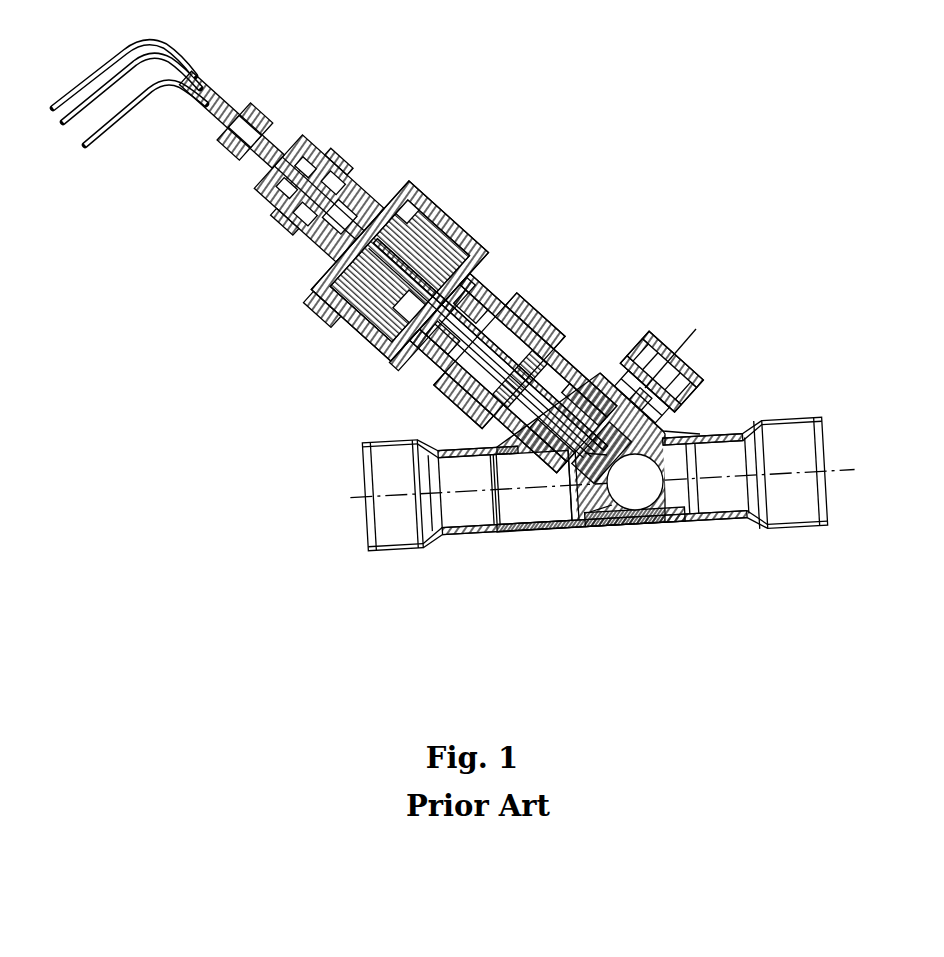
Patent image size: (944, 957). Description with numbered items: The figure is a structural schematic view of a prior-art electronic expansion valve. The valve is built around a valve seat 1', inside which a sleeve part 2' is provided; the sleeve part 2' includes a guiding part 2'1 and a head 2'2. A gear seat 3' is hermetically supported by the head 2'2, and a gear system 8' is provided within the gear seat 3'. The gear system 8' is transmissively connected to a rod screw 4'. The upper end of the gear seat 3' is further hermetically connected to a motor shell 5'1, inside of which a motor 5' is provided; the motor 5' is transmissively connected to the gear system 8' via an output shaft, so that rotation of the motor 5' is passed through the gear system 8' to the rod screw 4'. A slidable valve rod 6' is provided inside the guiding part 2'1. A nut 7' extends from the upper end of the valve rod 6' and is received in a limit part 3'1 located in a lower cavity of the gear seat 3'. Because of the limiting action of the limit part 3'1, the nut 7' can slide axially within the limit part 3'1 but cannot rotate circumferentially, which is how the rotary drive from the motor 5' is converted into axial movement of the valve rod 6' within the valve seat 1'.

The valve seat 1' is at (602, 411).
The sleeve part 2' is at (654, 315).
The guiding part 2'1 is at (522, 347).
The head 2'2 is at (535, 347).
The gear seat 3' is at (513, 322).
The limit part 3'1 is at (449, 366).
The rod screw 4' is at (399, 292).
The motor 5' is at (400, 198).
The motor shell 5'1 is at (285, 112).
The valve rod 6' is at (612, 529).
The nut 7' is at (531, 528).
The gear system 8' is at (525, 235).